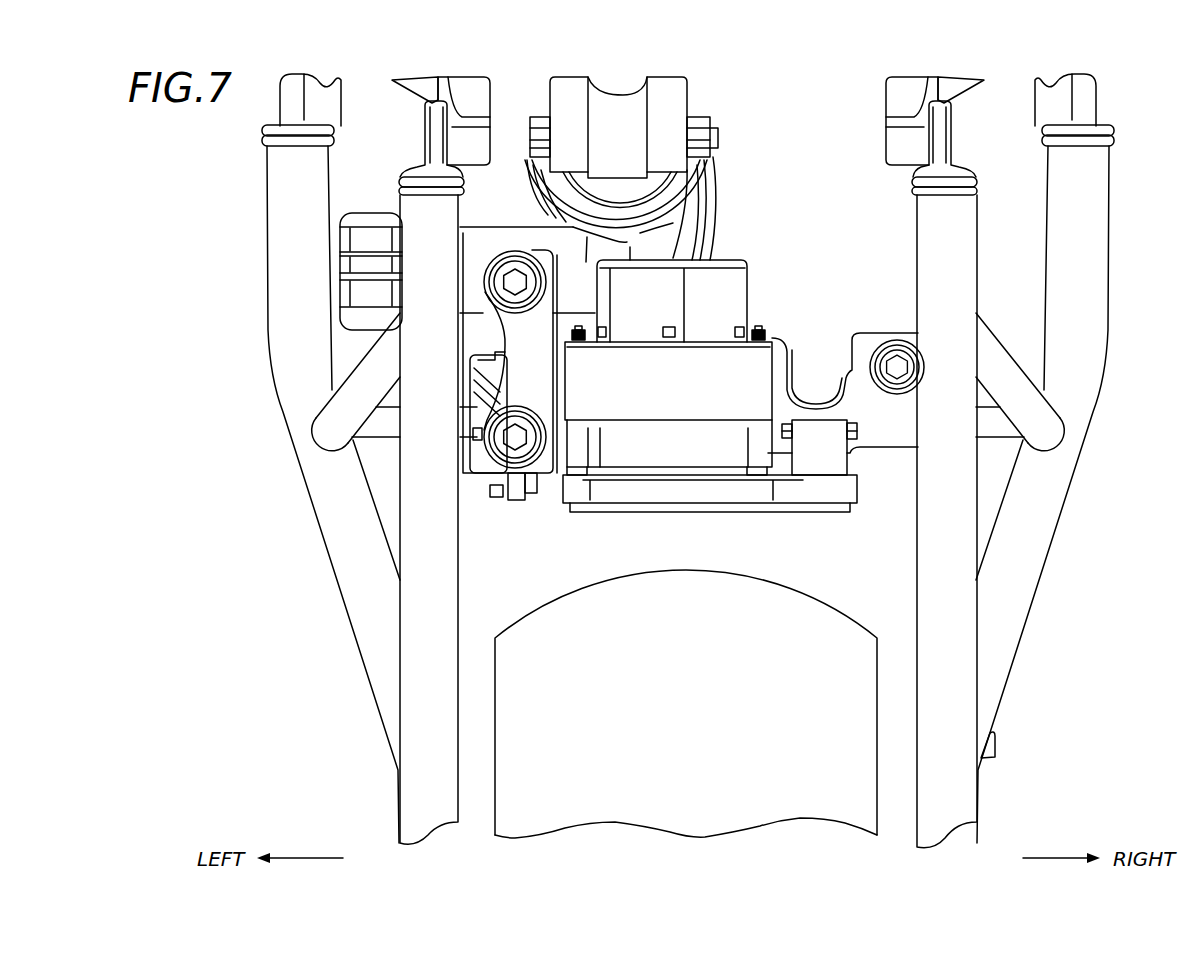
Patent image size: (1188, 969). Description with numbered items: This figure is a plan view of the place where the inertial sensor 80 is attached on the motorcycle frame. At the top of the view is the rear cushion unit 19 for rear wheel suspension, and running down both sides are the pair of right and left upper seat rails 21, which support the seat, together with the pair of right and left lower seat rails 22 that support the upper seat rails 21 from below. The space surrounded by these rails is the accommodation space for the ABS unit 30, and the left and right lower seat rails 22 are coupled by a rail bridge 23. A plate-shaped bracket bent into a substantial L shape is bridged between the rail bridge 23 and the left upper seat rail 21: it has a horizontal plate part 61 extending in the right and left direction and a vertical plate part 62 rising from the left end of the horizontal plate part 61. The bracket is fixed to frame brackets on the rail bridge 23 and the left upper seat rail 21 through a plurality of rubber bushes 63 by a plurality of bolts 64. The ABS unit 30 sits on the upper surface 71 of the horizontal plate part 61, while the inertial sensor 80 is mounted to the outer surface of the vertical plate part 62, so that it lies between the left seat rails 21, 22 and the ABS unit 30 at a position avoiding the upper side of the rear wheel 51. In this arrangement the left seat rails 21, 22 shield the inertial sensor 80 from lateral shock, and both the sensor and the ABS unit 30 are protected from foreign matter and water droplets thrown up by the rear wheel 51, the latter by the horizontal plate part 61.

The rear cushion unit 19 is at (715, 170).
The upper seat rails 21 is at (412, 663).
The lower seat rails 22 is at (325, 490).
The rail bridge 23 is at (993, 438).
The ABS unit 30 is at (760, 305).
The rear wheel 51 is at (818, 623).
The horizontal plate part 61 is at (790, 405).
The upper surface 71 is at (845, 383).
The vertical plate part 62 is at (520, 342).
The rubber bushes 63 is at (487, 278).
The bolts 64 is at (514, 278).
The inertial sensor 80 is at (492, 513).